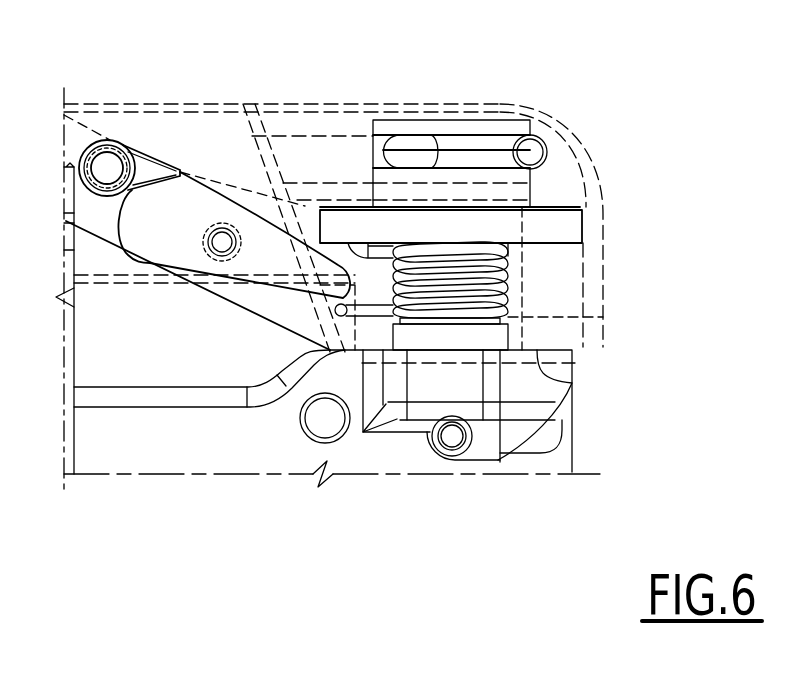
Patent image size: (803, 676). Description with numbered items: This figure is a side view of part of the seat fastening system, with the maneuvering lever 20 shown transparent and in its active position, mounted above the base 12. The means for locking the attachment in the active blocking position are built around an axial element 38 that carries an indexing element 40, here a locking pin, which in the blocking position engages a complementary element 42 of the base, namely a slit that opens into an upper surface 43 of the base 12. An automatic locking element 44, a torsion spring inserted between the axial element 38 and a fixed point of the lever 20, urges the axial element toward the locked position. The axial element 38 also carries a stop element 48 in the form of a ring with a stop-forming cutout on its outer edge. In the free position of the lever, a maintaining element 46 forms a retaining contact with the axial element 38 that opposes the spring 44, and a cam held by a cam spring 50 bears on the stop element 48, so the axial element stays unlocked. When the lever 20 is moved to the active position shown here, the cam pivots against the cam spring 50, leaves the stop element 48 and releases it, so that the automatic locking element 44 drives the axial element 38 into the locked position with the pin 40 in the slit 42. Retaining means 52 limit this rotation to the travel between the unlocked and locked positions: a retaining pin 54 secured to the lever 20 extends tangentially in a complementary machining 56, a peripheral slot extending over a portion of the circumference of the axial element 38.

The base 12 is at (330, 501).
The maneuvering lever 20 is at (268, 89).
The axial element 38 is at (494, 335).
The indexing element 40 is at (452, 438).
The complementary element 42 is at (557, 430).
The upper surface 43 is at (568, 382).
The automatic locking element 44 is at (520, 281).
The maintaining element 46 is at (162, 243).
The stop element 48 is at (540, 226).
The cam spring 50 is at (107, 167).
The retaining means 52 is at (540, 122).
The retaining pin 54 is at (530, 152).
The complementary machining 56 is at (472, 147).